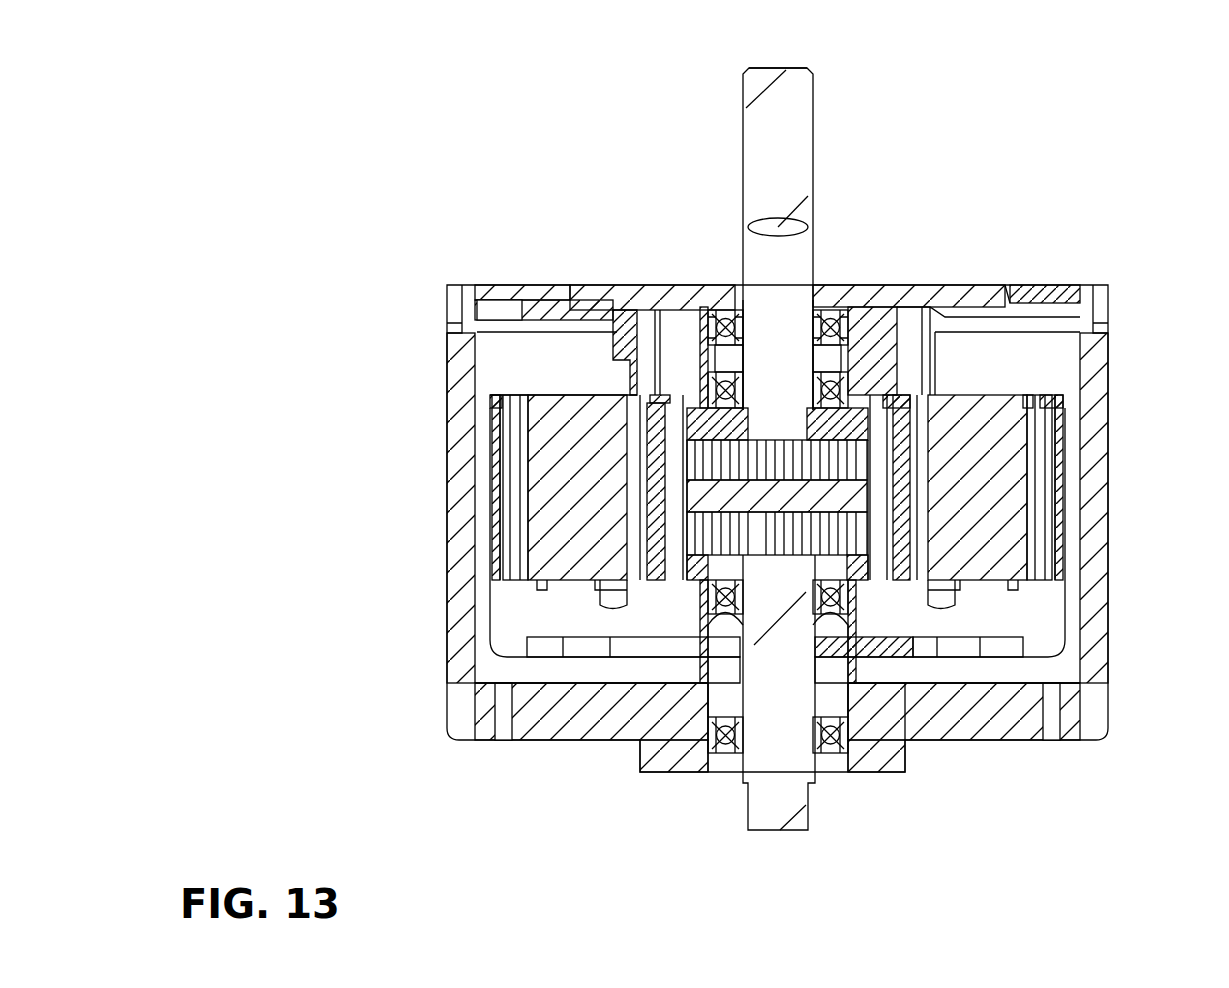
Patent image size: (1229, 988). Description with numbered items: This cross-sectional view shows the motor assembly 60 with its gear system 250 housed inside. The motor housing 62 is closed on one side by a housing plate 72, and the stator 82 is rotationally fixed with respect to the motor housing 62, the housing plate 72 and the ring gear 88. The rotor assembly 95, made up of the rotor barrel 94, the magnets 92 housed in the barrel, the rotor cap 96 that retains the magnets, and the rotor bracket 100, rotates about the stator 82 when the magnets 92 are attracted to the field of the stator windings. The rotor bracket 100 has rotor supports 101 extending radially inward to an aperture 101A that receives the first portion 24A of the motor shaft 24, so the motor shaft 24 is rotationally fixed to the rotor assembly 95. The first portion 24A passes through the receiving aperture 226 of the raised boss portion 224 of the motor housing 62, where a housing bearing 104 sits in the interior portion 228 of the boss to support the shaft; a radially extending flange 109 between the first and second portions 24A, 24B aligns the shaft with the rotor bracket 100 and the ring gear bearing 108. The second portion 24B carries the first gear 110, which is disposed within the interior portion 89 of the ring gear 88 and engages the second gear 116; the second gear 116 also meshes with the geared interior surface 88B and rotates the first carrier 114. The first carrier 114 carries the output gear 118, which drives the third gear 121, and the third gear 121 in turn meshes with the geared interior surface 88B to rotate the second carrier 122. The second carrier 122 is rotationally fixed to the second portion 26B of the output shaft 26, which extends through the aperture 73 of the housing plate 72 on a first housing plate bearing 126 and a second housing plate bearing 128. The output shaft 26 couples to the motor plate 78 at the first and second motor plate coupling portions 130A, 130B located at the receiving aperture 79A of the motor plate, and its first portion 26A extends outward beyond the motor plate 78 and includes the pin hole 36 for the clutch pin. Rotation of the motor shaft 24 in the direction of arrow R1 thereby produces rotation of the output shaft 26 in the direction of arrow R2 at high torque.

The motor shaft 24 is at (760, 846).
The first portion of the motor shaft 24A is at (748, 790).
The second portion of the motor shaft 24B is at (770, 595).
The output shaft 26 is at (740, 90).
The first portion of the output shaft 26A is at (812, 72).
The second portion of the output shaft 26B is at (742, 340).
The pin hole 36 is at (783, 226).
The motor assembly 60 is at (530, 205).
The motor housing 62 is at (1108, 358).
The housing plate 72 is at (1035, 288).
The aperture of the housing plate 73 is at (885, 330).
The motor plate 78 is at (935, 292).
The receiving aperture of the motor plate 79A is at (738, 292).
The stator 82 is at (545, 400).
The ring gear 88 is at (605, 380).
The geared interior surface of the ring gear 88B is at (680, 447).
The interior portion of the ring gear 89 is at (655, 430).
The magnets 92 is at (640, 520).
The rotor barrel 94 is at (660, 440).
The rotor assembly 95 is at (484, 470).
The rotor cap 96 is at (690, 430).
The rotor bracket 100 is at (495, 625).
The rotor supports 101 is at (553, 655).
The aperture of the rotor bracket 101A is at (838, 650).
The housing bearing 104 is at (848, 708).
The ring gear bearing 108 is at (735, 560).
The radially extending flange 109 is at (858, 625).
The first gear 110 is at (848, 700).
The first carrier 114 is at (872, 505).
The second gear 116 is at (872, 532).
The output gear 118 is at (840, 500).
The third gear 121 is at (880, 465).
The second carrier 122 is at (1020, 400).
The first housing plate bearing 126 is at (850, 400).
The second housing plate bearing 128 is at (832, 372).
The first motor plate coupling portion 130A is at (722, 306).
The second motor plate coupling portion 130B is at (832, 300).
The raised boss portion 224 is at (842, 640).
The receiving aperture 226 is at (718, 768).
The interior portion of the raised boss portion 228 is at (790, 640).
The gear system 250 is at (665, 525).
The direction of rotation of the motor shaft R1 is at (728, 817).
The direction of rotation of the output shaft R2 is at (718, 143).